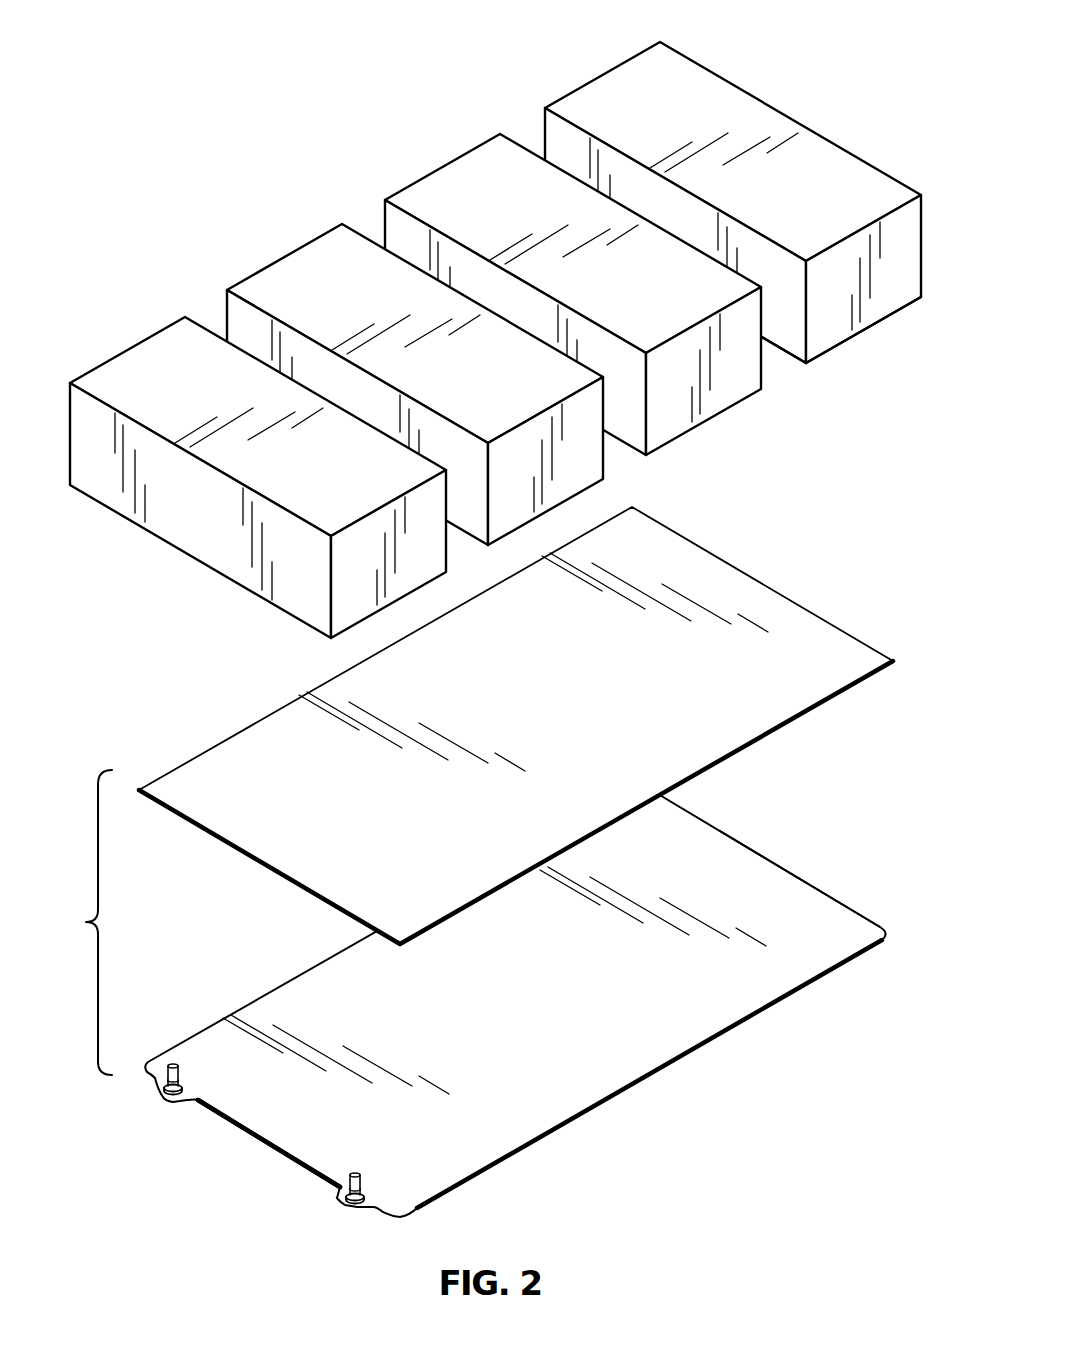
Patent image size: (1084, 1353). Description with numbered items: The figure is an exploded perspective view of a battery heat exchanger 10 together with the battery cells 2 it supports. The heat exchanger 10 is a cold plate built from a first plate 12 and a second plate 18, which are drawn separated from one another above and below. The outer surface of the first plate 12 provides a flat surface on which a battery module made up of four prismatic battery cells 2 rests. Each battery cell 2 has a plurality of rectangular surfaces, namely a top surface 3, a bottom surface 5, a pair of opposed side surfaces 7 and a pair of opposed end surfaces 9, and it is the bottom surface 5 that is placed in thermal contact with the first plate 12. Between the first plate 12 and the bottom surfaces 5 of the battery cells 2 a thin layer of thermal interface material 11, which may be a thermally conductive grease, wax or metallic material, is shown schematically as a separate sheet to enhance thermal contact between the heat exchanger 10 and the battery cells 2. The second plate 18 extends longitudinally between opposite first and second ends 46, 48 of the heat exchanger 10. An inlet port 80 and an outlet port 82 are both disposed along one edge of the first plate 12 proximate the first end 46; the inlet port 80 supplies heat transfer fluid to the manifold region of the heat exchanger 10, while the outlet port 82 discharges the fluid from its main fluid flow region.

The battery cell 2 is at (512, 321).
The top surface 3 is at (733, 147).
The bottom surface 5 is at (733, 335).
The side surfaces 7 is at (749, 279).
The end surfaces 9 is at (876, 303).
The heat exchanger 10 is at (483, 879).
The thermal interface material 11 is at (760, 597).
The first plate 12 is at (752, 860).
The second plate 18 is at (660, 1070).
The first end 46 is at (208, 1147).
The second end 48 is at (832, 866).
The inlet port 80 is at (345, 1190).
The outlet port 82 is at (160, 1077).